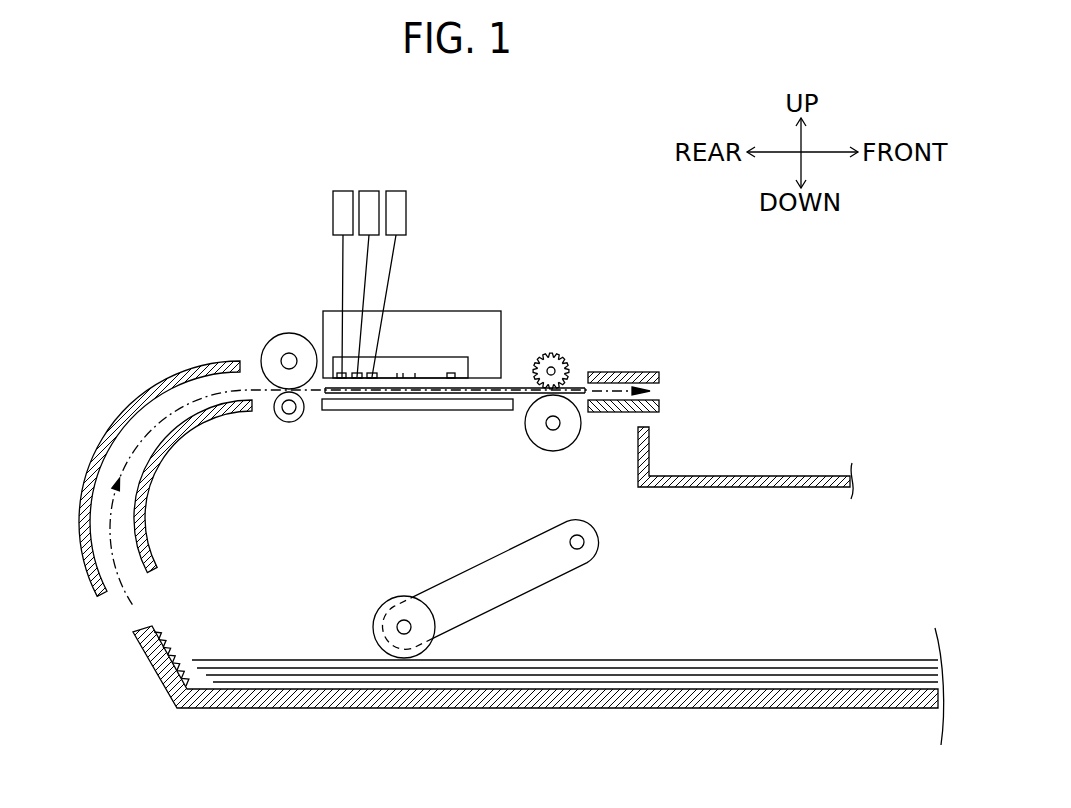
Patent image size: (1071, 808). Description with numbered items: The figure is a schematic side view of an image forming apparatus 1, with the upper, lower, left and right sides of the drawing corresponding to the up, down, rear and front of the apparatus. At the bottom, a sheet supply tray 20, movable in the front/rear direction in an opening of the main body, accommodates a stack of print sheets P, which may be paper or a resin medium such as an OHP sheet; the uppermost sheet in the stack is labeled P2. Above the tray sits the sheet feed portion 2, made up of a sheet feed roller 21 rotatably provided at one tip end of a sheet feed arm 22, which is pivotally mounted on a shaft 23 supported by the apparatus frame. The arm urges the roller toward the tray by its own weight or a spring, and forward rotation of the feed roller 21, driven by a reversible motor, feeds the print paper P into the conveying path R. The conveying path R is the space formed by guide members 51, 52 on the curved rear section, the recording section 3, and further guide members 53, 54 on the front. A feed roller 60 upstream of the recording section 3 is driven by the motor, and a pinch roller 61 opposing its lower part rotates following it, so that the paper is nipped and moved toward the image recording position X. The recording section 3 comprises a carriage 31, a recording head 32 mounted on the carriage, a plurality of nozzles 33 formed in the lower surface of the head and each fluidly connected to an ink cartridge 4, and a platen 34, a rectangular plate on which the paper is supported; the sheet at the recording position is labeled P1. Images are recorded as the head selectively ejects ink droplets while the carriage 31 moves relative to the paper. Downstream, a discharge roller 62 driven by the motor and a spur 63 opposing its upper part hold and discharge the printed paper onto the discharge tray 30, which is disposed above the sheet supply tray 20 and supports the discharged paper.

The image forming apparatus 1 is at (654, 267).
The sheet feed portion 2 is at (538, 603).
The recording section 3 is at (452, 282).
The ink cartridge 4 is at (412, 187).
The sheet supply tray 20 is at (656, 721).
The sheet feed roller 21 is at (392, 598).
The sheet feed arm 22 is at (493, 563).
The shaft 23 is at (580, 550).
The discharge tray 30 is at (700, 476).
The carriage 31 is at (478, 311).
The recording head 32 is at (413, 357).
The nozzles 33 is at (342, 378).
The platen 34 is at (468, 410).
The guide member 51 is at (79, 525).
The guide member 52 is at (144, 524).
The guide member 53 is at (617, 372).
The guide member 54 is at (617, 412).
The feed roller 60 is at (289, 333).
The pinch roller 61 is at (289, 422).
The discharge roller 62 is at (553, 452).
The spur 63 is at (551, 353).
The image recording position X is at (332, 356).
The print sheet P is at (769, 657).
The sheet at printing position P1 is at (413, 395).
The sheet in tray P2 is at (283, 660).
The conveying path R is at (107, 467).